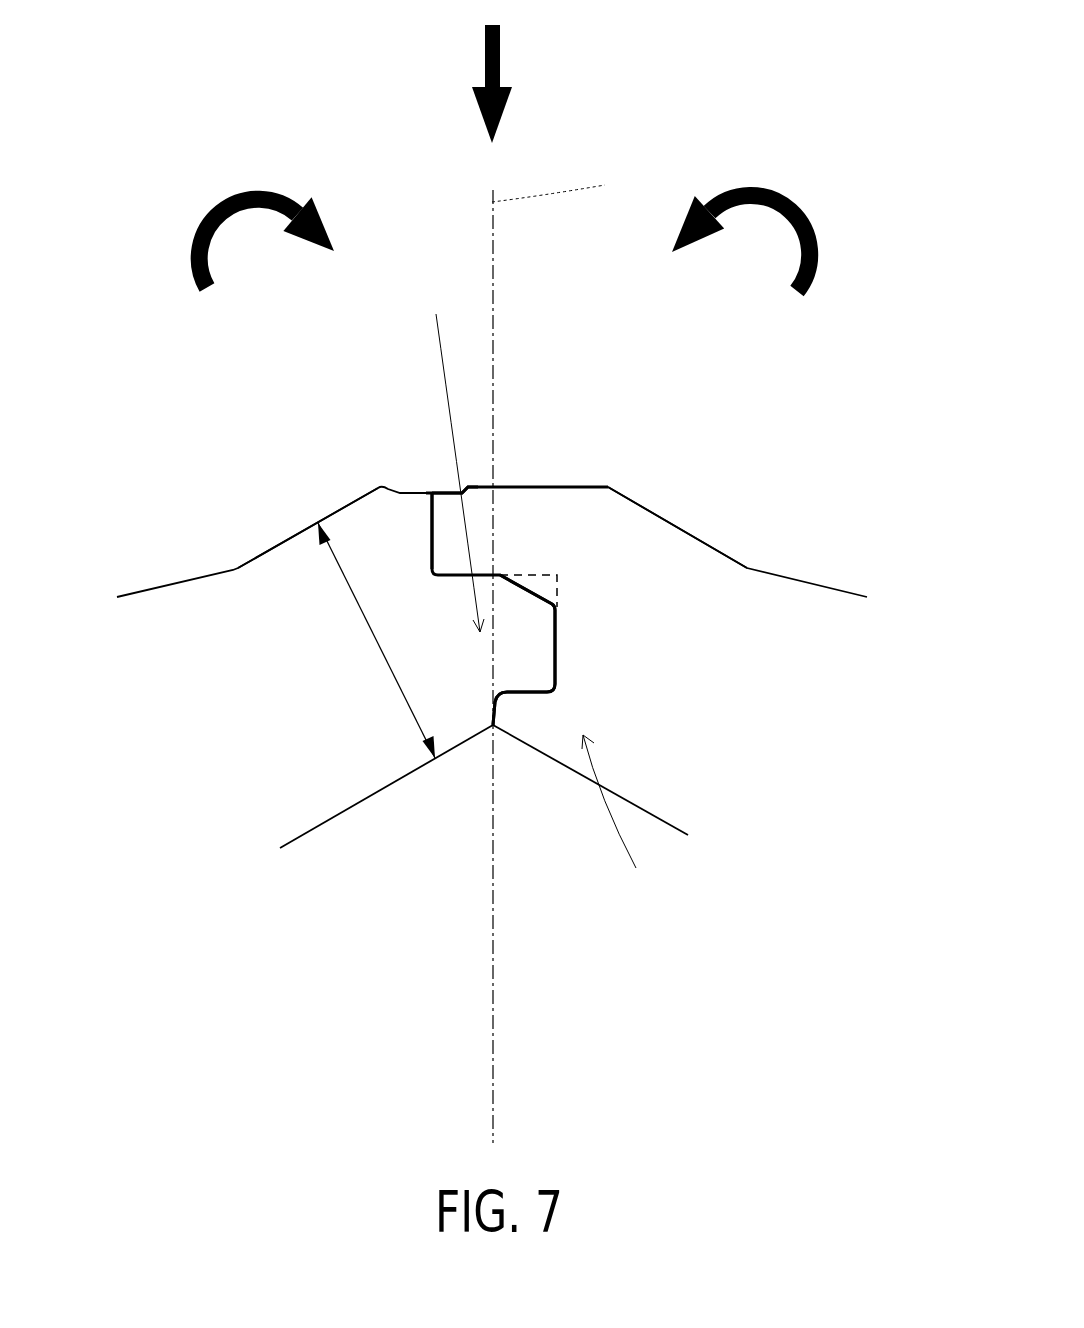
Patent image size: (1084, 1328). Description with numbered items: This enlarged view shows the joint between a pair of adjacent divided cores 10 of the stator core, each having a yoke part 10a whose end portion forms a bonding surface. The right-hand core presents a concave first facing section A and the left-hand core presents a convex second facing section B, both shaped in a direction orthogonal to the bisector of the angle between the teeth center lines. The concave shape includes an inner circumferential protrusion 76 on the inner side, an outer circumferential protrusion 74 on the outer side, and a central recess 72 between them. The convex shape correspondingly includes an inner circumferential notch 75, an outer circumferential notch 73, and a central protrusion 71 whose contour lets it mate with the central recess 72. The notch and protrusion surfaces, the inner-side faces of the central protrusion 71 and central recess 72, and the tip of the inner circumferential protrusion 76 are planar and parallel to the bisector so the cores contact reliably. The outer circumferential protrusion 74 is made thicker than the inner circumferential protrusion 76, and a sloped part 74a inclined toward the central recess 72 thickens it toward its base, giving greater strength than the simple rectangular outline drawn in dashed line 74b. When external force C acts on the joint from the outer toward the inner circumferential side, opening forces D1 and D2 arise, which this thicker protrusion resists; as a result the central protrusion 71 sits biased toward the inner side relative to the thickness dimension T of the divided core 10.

The divided core 10 is at (182, 578).
The yoke part 10a is at (255, 587).
The central protrusion 71 is at (527, 613).
The central recess 72 is at (540, 638).
The outer circumferential notch 73 is at (431, 496).
The outer circumferential protrusion 74 is at (430, 547).
The sloped part 74a is at (557, 617).
The simple rectangular shape 74b is at (553, 573).
The inner circumferential notch 75 is at (505, 712).
The inner circumferential protrusion 76 is at (518, 715).
The external force C is at (502, 53).
The opening direction force D1 is at (793, 203).
The opening direction force D2 is at (210, 205).
The second facing section B is at (452, 458).
The length dimension in thickness direction T is at (372, 637).
The first facing section A is at (616, 818).